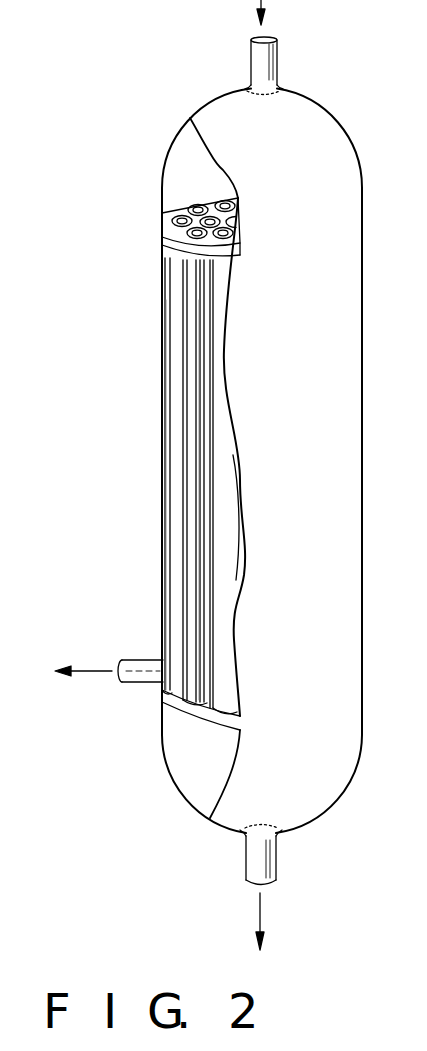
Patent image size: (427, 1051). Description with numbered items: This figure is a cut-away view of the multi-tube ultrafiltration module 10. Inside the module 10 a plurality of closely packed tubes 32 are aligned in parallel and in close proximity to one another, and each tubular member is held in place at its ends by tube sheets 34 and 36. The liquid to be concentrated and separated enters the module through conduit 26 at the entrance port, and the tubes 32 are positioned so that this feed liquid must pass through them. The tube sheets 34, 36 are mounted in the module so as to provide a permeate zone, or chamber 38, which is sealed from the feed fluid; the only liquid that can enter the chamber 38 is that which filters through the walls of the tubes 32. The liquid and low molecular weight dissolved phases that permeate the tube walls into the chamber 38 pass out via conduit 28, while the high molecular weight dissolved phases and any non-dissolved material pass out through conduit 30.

The ultrafiltration module 10 is at (345, 323).
The conduit 26 is at (267, 64).
The conduit 28 is at (134, 660).
The conduit 30 is at (267, 864).
The tubes 32 is at (185, 214).
The tube sheet 34 is at (168, 237).
The tube sheet 36 is at (163, 705).
The chamber 38 is at (162, 387).